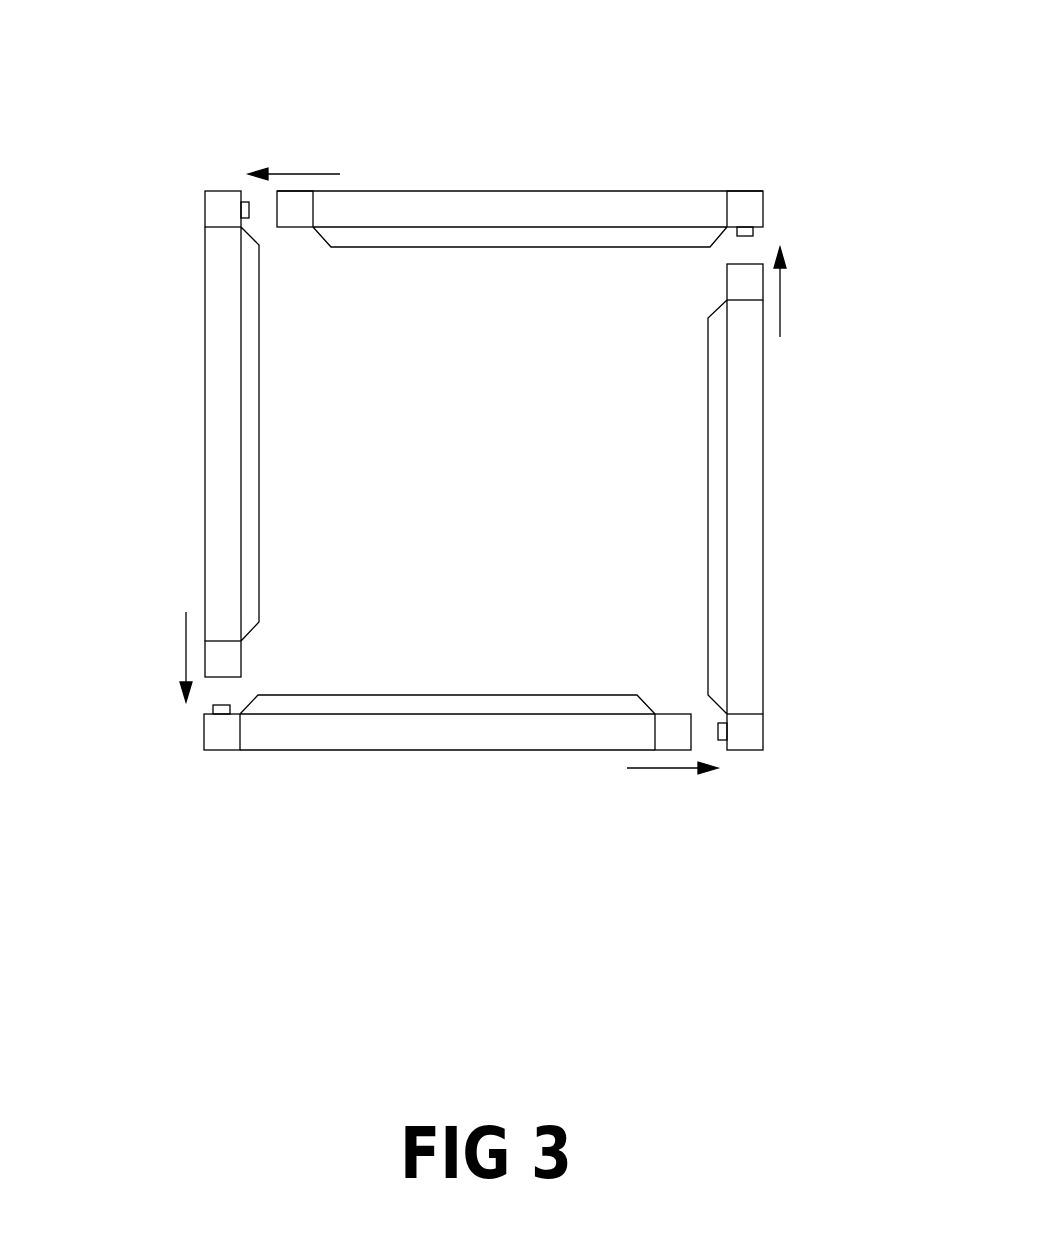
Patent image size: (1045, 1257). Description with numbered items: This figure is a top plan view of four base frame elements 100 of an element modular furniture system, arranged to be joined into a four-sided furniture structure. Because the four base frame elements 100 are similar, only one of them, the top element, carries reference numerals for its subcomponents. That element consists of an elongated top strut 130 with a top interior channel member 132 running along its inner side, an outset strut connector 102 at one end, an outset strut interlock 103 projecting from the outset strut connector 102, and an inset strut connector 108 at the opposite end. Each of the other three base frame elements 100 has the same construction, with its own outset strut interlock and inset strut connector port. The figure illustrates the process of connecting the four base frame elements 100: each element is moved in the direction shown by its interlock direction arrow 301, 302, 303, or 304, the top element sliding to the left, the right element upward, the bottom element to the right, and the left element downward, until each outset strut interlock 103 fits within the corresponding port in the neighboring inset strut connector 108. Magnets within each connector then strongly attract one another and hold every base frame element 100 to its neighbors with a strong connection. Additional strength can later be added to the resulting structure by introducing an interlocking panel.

The base frame element 100 is at (567, 478).
The outset strut connector 102 is at (763, 191).
The outset strut interlock 103 is at (757, 232).
The inset strut connector 108 is at (277, 227).
The top strut 130 is at (653, 191).
The top interior channel member 132 is at (483, 247).
The interlock direction arrow 301 is at (303, 174).
The interlock direction arrow 302 is at (780, 300).
The interlock direction arrow 303 is at (663, 768).
The interlock direction arrow 304 is at (186, 660).